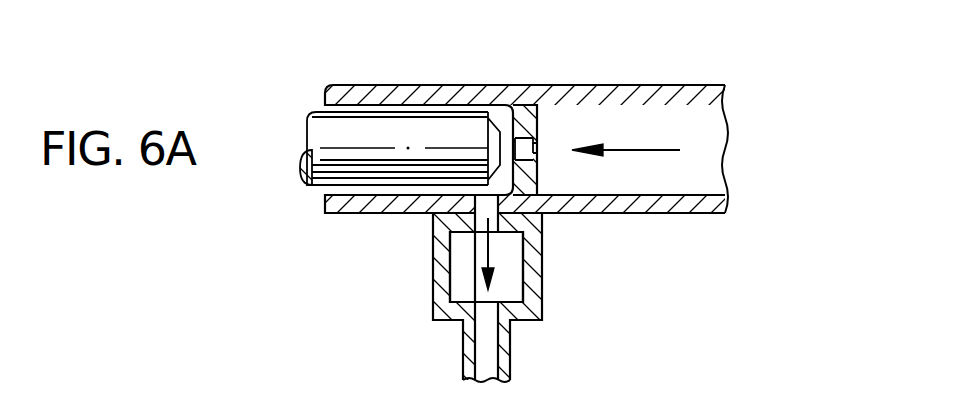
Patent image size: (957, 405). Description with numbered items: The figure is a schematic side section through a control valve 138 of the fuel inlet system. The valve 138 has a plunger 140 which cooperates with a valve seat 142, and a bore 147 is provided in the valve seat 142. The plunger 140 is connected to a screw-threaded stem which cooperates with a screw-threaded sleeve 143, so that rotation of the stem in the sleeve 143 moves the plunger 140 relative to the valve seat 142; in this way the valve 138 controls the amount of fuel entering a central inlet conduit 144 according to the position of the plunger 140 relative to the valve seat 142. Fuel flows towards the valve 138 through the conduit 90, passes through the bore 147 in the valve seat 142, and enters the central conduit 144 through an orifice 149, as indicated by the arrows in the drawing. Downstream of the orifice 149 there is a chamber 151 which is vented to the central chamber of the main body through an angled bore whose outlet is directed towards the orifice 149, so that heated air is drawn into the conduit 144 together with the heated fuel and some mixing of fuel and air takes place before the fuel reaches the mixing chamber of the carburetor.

The conduit 90 is at (651, 96).
The control valve 138 is at (318, 226).
The plunger 140 is at (418, 128).
The valve seat 142 is at (526, 120).
The screw-threaded sleeve 143 is at (360, 86).
The central inlet conduit 144 is at (463, 357).
The bore 147 is at (537, 150).
The orifice 149 is at (482, 234).
The chamber 151 is at (510, 283).